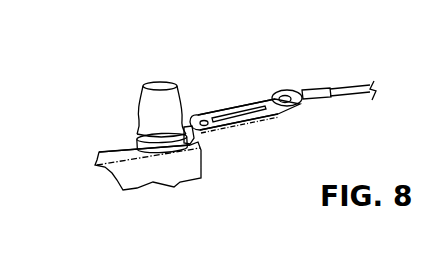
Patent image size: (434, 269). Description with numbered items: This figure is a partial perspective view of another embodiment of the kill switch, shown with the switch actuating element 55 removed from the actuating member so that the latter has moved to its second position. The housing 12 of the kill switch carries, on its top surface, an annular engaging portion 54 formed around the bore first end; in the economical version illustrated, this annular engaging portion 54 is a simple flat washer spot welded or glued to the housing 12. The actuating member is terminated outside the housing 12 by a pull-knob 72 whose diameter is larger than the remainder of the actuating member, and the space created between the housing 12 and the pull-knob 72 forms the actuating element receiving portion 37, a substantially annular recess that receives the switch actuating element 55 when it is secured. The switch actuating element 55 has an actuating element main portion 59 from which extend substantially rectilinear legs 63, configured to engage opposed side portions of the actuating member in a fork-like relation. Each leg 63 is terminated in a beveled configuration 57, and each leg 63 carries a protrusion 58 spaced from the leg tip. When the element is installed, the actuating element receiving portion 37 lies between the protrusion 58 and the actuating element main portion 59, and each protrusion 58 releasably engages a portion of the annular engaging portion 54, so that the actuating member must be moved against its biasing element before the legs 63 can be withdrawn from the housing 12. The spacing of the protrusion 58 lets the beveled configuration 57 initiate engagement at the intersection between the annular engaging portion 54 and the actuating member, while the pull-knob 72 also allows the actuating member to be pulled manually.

The housing 12 is at (104, 150).
The actuating element receiving portion 37 is at (142, 135).
The annular engaging portion 54 is at (153, 143).
The switch actuating element 55 is at (247, 102).
The beveled configuration 57 is at (192, 118).
The protrusion 58 is at (207, 132).
The actuating element main portion 59 is at (280, 118).
The legs 63 is at (205, 117).
The pull-knob 72 is at (146, 97).